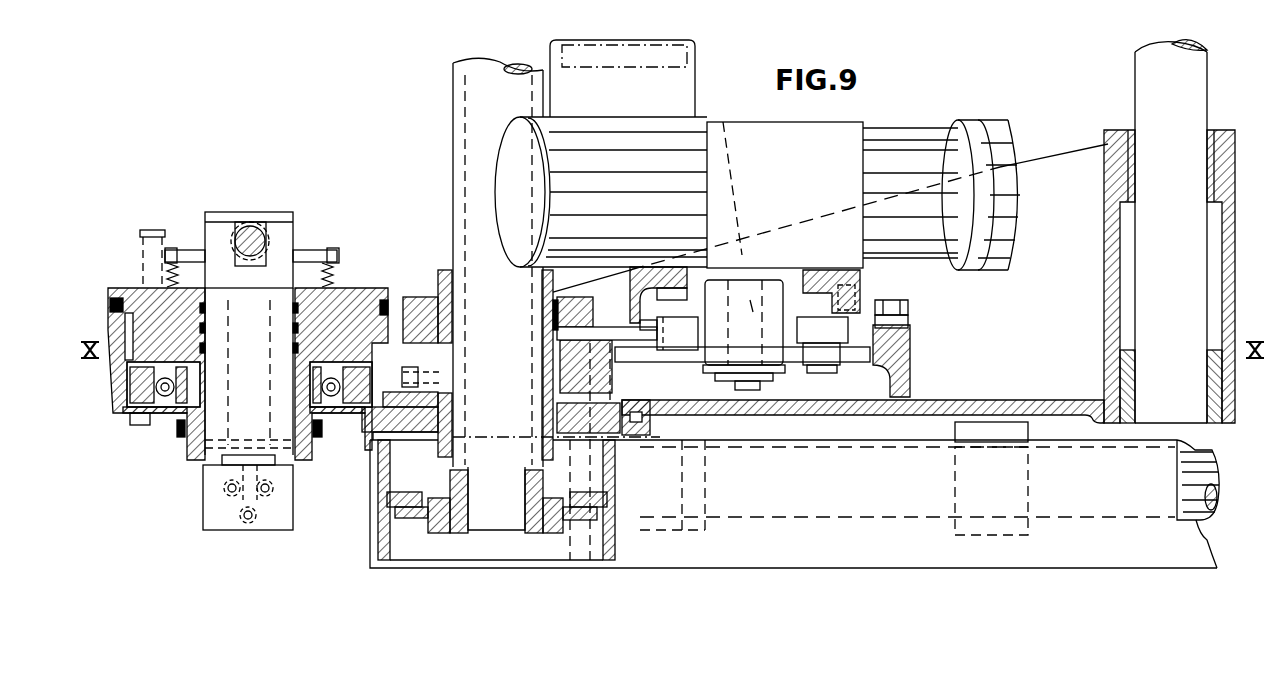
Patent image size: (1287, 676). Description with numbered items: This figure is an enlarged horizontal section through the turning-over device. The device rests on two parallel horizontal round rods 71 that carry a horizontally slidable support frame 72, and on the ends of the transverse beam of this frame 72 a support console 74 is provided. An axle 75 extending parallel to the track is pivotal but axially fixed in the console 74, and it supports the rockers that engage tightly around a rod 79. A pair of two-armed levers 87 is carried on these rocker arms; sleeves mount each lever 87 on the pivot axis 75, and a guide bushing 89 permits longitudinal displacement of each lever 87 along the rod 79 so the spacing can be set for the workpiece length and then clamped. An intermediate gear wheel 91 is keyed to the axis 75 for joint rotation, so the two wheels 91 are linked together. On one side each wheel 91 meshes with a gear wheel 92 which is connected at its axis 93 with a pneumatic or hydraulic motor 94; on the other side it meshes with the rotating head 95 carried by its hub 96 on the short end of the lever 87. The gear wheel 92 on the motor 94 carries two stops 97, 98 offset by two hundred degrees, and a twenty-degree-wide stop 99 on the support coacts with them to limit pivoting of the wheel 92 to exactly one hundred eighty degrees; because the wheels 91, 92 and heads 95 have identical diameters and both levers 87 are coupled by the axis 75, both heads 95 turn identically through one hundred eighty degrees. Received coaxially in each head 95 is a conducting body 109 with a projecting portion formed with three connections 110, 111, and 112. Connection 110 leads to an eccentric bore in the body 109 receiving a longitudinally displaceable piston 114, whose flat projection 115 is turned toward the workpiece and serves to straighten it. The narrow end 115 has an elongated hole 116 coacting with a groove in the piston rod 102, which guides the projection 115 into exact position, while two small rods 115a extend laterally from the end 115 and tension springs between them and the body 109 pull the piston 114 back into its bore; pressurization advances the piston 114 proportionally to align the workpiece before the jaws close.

The round rod 71 is at (1205, 493).
The support frame 72 is at (1052, 555).
The support console 74 is at (443, 533).
The axle 75 is at (485, 100).
The rod 79 is at (1152, 100).
The two-armed lever 87 is at (970, 403).
The guide bushing 89 is at (1108, 146).
The intermediate gear wheel 91 is at (636, 432).
The gear wheel 92 is at (440, 362).
The axis 93 is at (679, 215).
The motor 94 is at (893, 148).
The rotating head 95 is at (363, 298).
The hub 96 is at (307, 443).
The stop 97 is at (672, 328).
The stop 98 is at (832, 330).
The stop 99 is at (838, 300).
The piston rod 102 is at (248, 233).
The conducting body 109 is at (217, 423).
The connection 110 is at (250, 520).
The connection 111 is at (230, 492).
The connection 112 is at (275, 492).
The piston 114 is at (247, 422).
The flat projection 115 is at (220, 228).
The small rod 115a is at (180, 252).
The elongated hole 116 is at (233, 262).